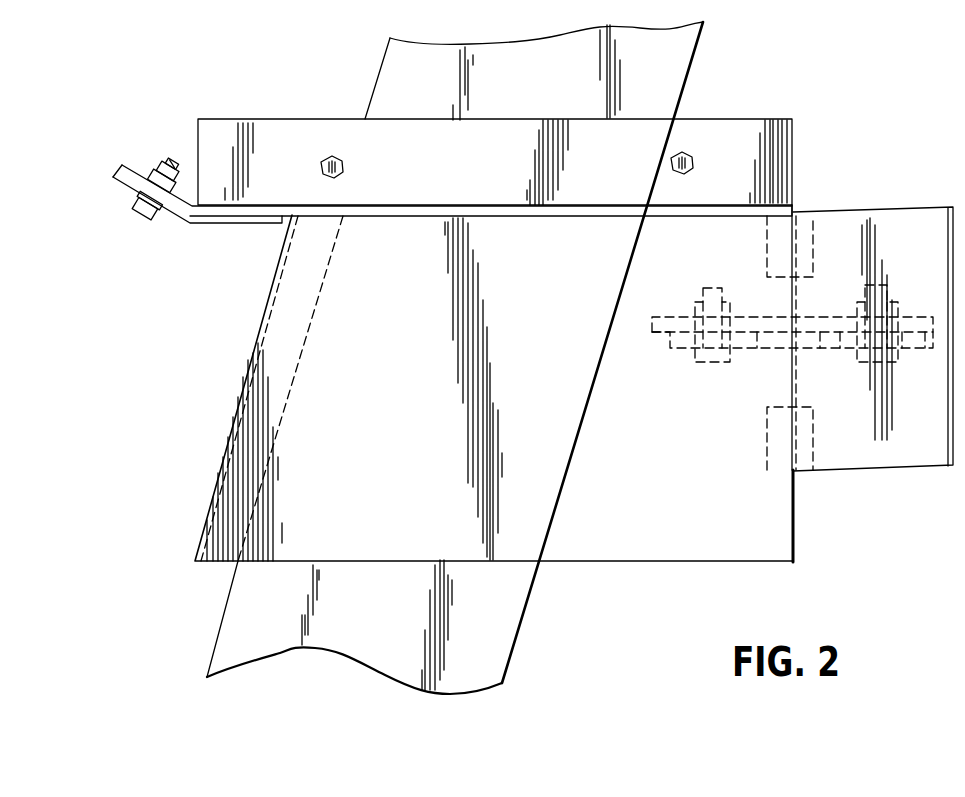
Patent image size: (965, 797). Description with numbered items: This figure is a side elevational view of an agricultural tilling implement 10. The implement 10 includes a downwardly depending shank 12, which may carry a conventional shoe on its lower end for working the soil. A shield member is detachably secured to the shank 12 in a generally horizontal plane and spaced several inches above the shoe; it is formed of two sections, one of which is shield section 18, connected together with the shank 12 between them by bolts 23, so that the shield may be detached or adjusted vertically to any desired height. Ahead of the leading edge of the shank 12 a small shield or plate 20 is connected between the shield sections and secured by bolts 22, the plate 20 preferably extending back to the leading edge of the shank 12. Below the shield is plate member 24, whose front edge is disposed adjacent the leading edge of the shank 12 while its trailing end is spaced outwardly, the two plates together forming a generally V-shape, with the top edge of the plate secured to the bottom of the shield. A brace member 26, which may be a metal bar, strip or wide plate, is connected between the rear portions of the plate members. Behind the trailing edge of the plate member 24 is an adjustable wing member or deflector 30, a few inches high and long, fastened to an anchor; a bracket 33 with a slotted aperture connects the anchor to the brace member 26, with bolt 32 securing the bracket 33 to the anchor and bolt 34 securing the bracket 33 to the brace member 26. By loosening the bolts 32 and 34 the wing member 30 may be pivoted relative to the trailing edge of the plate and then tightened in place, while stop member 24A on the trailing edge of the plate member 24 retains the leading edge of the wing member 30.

The agricultural tilling implement 10 is at (278, 100).
The shank 12 is at (505, 622).
The shield section 18 is at (242, 210).
The shield or plate 20 is at (123, 178).
The bolt 22 is at (150, 204).
The bolt 23 is at (341, 155).
The plate member 24 is at (652, 548).
The stop member 24A is at (813, 242).
The brace member 26 is at (674, 352).
The wing member or deflector 30 is at (866, 441).
The bolt 32 is at (888, 367).
The bracket 33 is at (851, 316).
The bolt 34 is at (718, 286).